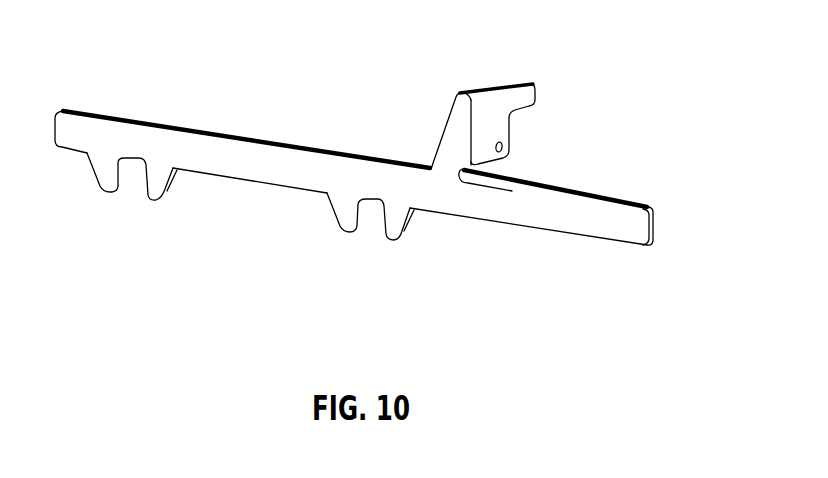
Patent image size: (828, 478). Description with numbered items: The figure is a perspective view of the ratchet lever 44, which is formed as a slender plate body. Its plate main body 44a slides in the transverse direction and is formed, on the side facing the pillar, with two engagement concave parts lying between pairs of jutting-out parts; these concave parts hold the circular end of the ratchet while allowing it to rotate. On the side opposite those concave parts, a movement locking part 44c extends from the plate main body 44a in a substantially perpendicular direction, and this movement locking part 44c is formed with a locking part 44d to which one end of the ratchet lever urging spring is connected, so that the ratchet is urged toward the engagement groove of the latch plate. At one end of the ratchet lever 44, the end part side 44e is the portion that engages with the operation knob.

The ratchet lever 44 is at (164, 91).
The plate main body 44a is at (250, 152).
The movement locking part 44c is at (497, 100).
The locking part 44d is at (506, 147).
The end part side 44e is at (624, 244).